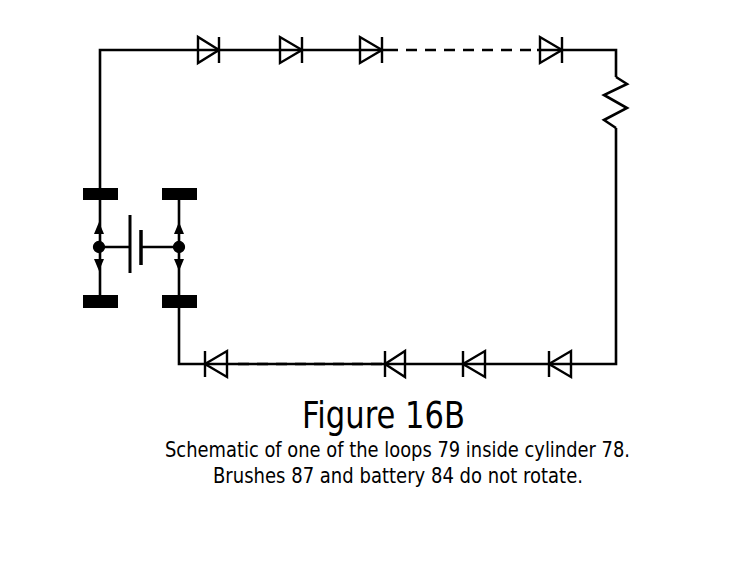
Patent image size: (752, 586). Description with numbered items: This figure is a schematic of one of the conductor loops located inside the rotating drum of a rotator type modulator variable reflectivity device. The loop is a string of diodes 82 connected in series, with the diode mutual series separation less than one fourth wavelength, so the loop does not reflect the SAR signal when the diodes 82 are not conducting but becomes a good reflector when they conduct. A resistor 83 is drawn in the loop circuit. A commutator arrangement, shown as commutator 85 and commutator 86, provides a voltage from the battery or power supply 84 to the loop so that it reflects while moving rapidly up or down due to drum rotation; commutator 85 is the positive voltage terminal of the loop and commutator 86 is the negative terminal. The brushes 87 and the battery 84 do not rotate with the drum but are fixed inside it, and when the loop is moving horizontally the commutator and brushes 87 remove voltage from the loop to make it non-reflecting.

The diodes 82 is at (206, 40).
The resistor 83 is at (620, 98).
The battery or power supply 84 is at (136, 222).
The commutator 85 is at (83, 190).
The commutator 86 is at (197, 302).
The brushes 87 is at (99, 216).